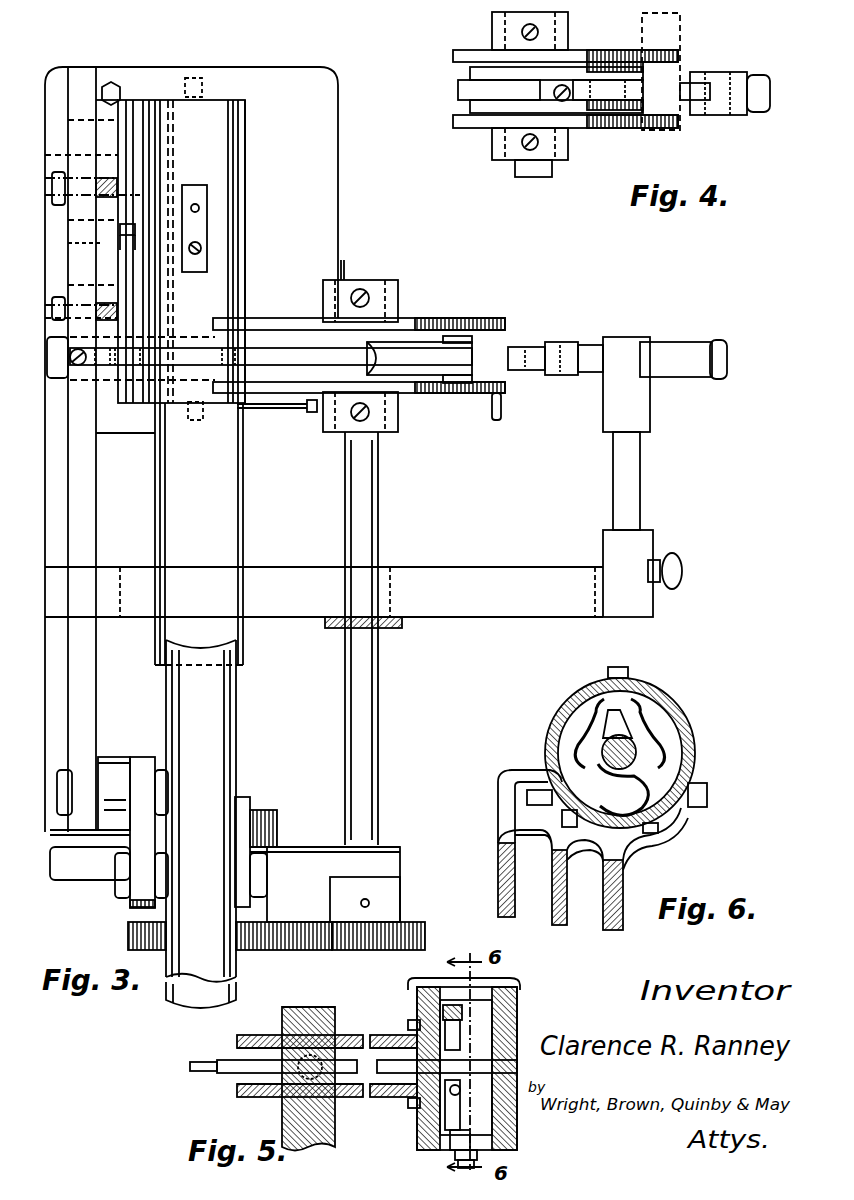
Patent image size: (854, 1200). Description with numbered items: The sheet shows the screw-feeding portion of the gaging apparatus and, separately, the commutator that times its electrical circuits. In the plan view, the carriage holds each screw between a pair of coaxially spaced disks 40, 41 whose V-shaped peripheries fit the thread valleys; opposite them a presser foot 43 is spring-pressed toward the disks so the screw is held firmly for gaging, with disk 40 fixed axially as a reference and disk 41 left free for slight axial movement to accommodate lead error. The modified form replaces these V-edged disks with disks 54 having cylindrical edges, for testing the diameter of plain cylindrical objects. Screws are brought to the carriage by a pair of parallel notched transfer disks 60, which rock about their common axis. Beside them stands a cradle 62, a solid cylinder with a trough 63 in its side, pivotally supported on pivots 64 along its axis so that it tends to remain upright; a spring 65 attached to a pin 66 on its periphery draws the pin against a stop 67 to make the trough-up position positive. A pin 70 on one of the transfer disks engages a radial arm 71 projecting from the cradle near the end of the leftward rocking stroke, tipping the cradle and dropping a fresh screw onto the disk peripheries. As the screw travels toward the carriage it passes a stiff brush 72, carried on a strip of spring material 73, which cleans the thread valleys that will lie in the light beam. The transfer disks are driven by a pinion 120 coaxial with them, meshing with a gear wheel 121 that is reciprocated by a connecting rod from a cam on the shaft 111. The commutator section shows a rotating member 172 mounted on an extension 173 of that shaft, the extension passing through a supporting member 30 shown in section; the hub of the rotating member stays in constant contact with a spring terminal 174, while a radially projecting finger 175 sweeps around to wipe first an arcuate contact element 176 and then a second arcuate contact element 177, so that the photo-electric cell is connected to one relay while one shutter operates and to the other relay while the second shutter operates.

In FIG. 5, the support block 30 is at (282, 1017).
In FIG. 3, the disk 40 is at (455, 336).
In FIG. 3, the disk 41 is at (445, 392).
In FIG. 3, the presser foot 43 is at (540, 347).
In FIG. 4, the presser foot 43 is at (700, 100).
In FIG. 4, the disks 54 is at (600, 62).
In FIG. 3, the transfer disks 60 is at (490, 318).
In FIG. 4, the transfer disks 60 is at (470, 56).
In FIG. 3, the cradle 62 is at (245, 200).
In FIG. 3, the trough 63 is at (210, 142).
In FIG. 3, the pivots 64 is at (196, 78).
In FIG. 3, the spring 65 is at (130, 252).
In FIG. 3, the pin 66 is at (122, 228).
In FIG. 3, the stop 67 is at (100, 243).
In FIG. 3, the pin 70 is at (501, 410).
In FIG. 3, the radial arm 71 is at (312, 412).
In FIG. 3, the brush 72 is at (410, 352).
In FIG. 4, the brush 72 is at (462, 90).
In FIG. 3, the strip of spring material 73 is at (287, 350).
In FIG. 5, the shaft 111 is at (205, 1062).
In FIG. 3, the pinion 120 is at (388, 950).
In FIG. 3, the gear wheel 121 is at (270, 950).
In FIG. 6, the rotating member 172 is at (602, 752).
In FIG. 5, the rotating member 172 is at (440, 1092).
In FIG. 6, the extension 173 is at (614, 790).
In FIG. 5, the extension 173 is at (348, 1058).
In FIG. 6, the spring terminal 174 is at (680, 822).
In FIG. 5, the spring terminal 174 is at (455, 1147).
In FIG. 6, the finger 175 is at (625, 708).
In FIG. 5, the finger 175 is at (462, 1035).
In FIG. 6, the arcuate contact element 176 is at (588, 718).
In FIG. 6, the arcuate contact element 177 is at (652, 727).
In FIG. 5, the arcuate contact element 177 is at (447, 1000).